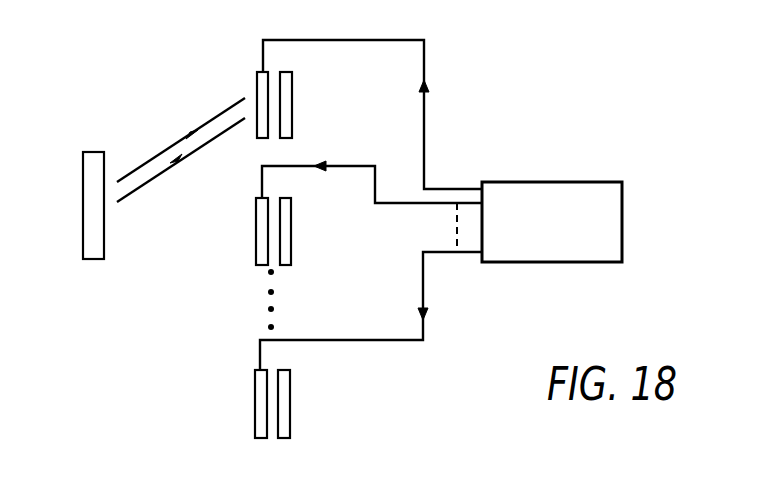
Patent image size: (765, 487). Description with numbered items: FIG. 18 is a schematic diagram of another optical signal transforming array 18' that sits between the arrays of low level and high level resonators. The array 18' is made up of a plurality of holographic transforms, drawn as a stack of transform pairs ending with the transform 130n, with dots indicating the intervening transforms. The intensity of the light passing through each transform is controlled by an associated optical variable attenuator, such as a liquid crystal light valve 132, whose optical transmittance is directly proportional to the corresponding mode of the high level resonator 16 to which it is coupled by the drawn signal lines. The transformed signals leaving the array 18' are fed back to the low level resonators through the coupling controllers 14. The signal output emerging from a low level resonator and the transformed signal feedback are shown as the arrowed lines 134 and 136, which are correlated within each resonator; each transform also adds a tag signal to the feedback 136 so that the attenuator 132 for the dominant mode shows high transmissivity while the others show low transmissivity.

The coupling controller 14 is at (83, 177).
The high level resonator 16 is at (578, 182).
The optical signal transforming array 18' is at (408, 200).
The holographic transform 130n is at (290, 405).
The liquid crystal light valve 132 is at (257, 82).
The emerging output 134 is at (172, 147).
The transformed signal feedback 136 is at (160, 173).